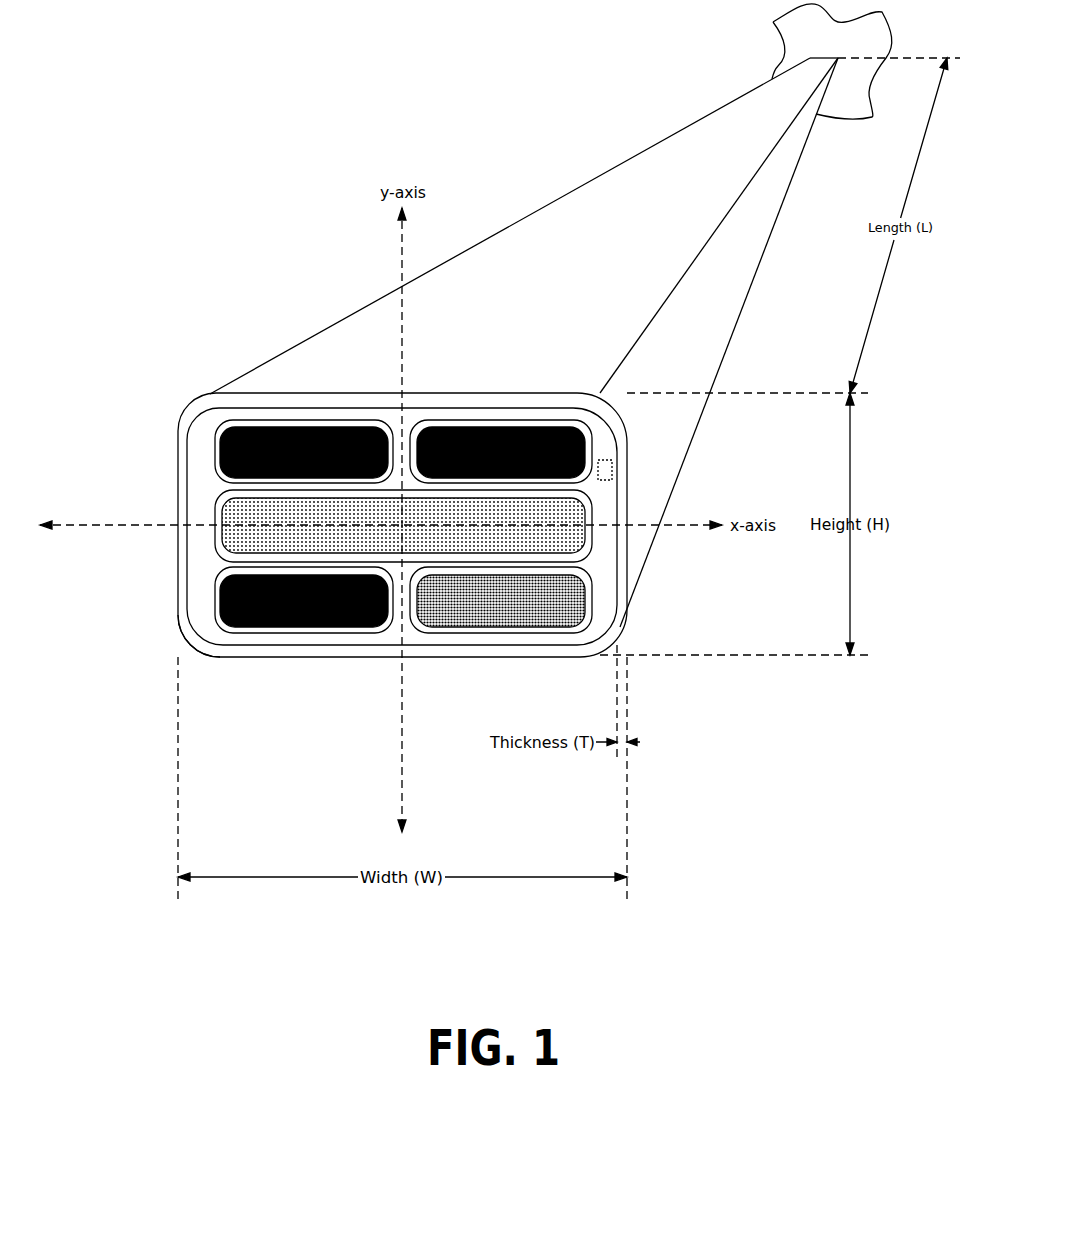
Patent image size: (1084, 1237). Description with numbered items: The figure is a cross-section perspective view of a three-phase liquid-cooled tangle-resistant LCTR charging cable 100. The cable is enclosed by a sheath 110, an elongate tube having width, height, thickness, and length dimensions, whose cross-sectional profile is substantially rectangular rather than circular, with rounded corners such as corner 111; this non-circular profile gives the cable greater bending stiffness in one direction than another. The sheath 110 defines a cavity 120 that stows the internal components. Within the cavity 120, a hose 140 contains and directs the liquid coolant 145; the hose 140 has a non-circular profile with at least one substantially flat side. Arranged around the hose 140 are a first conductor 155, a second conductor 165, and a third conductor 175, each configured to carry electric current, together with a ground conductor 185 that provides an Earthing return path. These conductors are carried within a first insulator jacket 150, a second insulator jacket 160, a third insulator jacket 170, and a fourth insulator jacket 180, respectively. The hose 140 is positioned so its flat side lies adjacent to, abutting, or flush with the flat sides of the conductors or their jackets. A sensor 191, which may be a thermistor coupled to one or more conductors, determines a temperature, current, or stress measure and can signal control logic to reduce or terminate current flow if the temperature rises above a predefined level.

The LCTR charging cable 100 is at (379, 428).
The sheath 110 is at (197, 410).
The corner 111 is at (188, 645).
The cavity 120 is at (203, 453).
The hose 140 is at (227, 502).
The liquid coolant 145 is at (242, 545).
The first insulator jacket 150 is at (267, 422).
The first conductor 155 is at (340, 428).
The second insulator jacket 160 is at (472, 427).
The second conductor 165 is at (543, 427).
The third insulator jacket 170 is at (260, 627).
The third conductor 175 is at (330, 625).
The fourth insulator jacket 180 is at (475, 625).
The ground conductor 185 is at (550, 605).
The sensor 191 is at (607, 460).